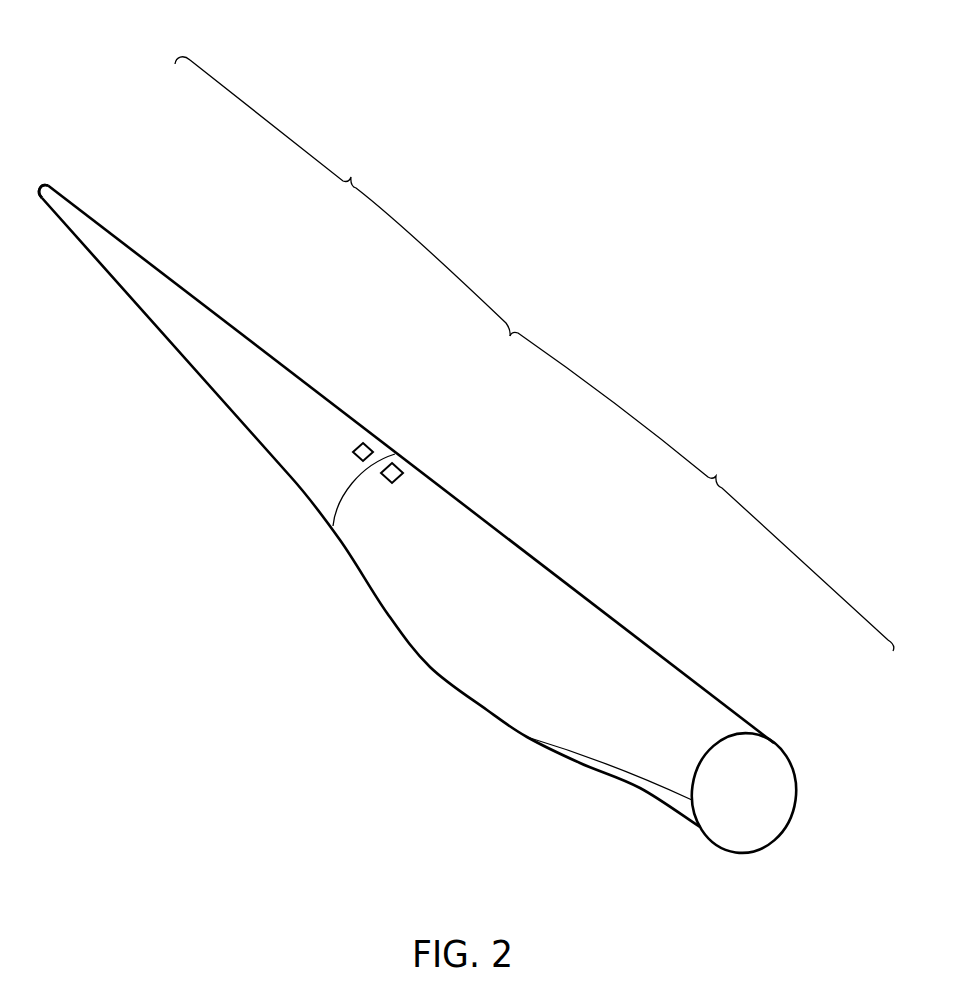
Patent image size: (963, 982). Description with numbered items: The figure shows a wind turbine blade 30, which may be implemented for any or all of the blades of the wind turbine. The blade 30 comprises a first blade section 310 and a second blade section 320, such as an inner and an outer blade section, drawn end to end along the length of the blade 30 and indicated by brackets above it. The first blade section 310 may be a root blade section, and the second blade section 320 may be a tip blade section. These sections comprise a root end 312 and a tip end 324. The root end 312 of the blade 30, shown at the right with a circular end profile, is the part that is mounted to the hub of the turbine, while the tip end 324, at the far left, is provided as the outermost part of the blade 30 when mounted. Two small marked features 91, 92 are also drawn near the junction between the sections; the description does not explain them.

The wind turbine blade 30 is at (603, 278).
The first blade section 310 is at (702, 491).
The root end 312 is at (773, 785).
The second blade section 320 is at (342, 196).
The tip end 324 is at (44, 182).
The first sensor 91 is at (370, 440).
The second sensor 92 is at (401, 462).